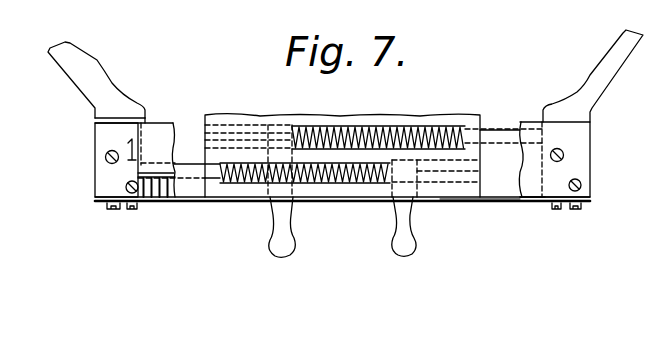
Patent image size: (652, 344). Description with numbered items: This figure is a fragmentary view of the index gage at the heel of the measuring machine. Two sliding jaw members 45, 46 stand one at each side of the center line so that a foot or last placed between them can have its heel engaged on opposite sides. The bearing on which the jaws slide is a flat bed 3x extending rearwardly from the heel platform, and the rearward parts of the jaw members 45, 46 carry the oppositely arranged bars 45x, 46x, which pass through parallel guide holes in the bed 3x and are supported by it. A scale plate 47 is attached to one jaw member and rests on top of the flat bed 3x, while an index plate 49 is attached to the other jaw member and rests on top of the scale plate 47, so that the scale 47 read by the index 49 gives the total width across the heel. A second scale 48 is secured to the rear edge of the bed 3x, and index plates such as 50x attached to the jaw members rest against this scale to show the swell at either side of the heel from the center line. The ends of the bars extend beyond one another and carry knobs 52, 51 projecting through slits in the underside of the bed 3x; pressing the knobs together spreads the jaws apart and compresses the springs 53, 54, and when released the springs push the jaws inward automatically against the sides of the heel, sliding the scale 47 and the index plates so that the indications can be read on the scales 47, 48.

The jaw member 45 is at (88, 77).
The jaw member 46 is at (607, 65).
The scale plate 47 is at (154, 134).
The flat bed 3x is at (250, 117).
The spring 54 is at (394, 119).
The spring 53 is at (347, 182).
The bar 46x is at (538, 152).
The bar 45x is at (192, 172).
The scale plate 48 is at (316, 199).
The knob 51 is at (275, 240).
The knob 52 is at (411, 236).
The index plate 50x is at (472, 202).
The index plate 49 is at (537, 190).